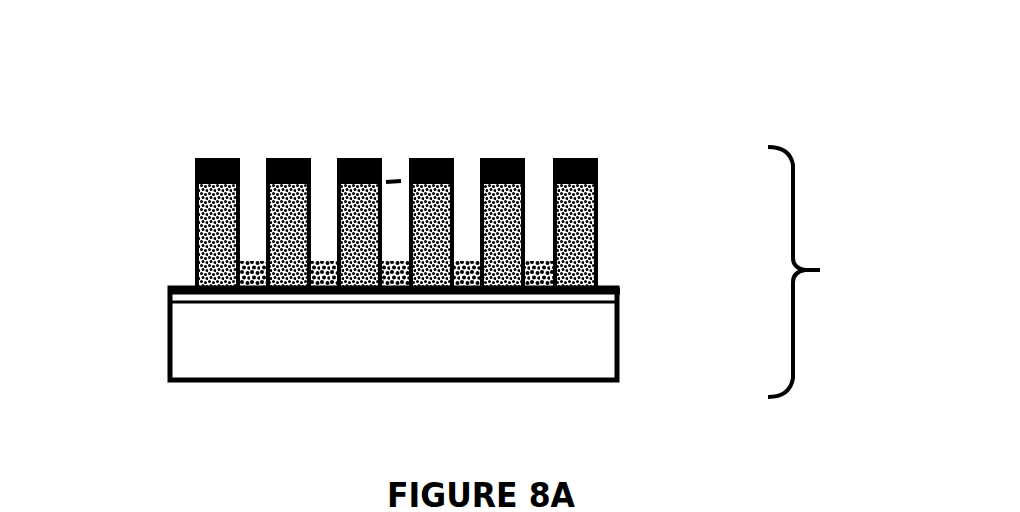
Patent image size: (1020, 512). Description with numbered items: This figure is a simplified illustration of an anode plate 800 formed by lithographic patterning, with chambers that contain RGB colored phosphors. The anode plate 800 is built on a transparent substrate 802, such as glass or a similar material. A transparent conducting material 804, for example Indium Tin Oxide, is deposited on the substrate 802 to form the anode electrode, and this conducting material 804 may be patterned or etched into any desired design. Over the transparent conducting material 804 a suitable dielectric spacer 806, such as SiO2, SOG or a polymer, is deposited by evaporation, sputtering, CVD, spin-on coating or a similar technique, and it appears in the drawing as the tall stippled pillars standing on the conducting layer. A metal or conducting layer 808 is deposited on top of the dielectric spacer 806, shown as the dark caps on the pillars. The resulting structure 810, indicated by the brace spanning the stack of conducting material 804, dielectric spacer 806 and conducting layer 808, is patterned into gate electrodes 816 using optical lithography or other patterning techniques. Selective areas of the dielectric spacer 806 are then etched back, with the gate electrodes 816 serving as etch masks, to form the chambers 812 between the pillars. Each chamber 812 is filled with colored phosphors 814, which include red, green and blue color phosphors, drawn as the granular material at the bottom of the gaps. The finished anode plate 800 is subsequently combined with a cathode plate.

The anode plate 800 is at (608, 104).
The transparent substrate 802 is at (170, 347).
The transparent conducting material 804 is at (618, 292).
The dielectric spacer 806 is at (597, 218).
The metal or conducting layer 808 is at (608, 173).
The resulting structure 810 is at (828, 272).
The chamber 812 is at (410, 302).
The colored phosphors 814 is at (395, 268).
The gate electrodes 816 is at (216, 160).